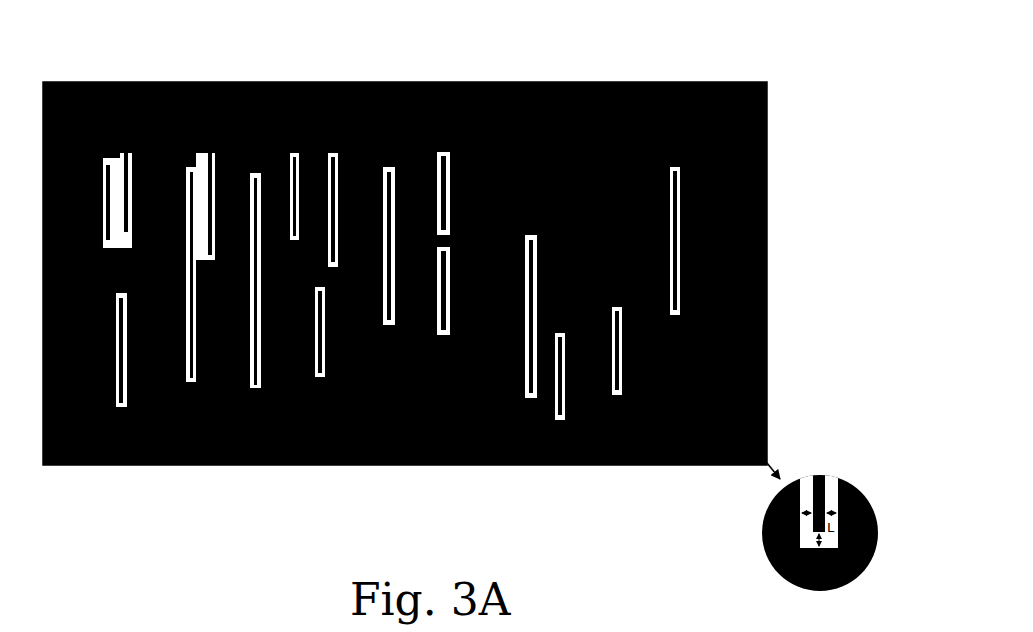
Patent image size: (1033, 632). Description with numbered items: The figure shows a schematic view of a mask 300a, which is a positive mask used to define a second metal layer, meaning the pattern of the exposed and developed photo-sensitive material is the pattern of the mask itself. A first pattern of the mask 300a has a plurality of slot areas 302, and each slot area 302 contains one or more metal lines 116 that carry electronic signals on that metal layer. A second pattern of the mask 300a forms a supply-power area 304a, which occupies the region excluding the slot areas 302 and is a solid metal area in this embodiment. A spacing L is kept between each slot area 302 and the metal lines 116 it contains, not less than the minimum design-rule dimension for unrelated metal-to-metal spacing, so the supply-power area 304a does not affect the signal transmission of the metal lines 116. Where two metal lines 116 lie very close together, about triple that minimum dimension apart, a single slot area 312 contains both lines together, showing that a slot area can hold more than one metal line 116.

The mask 300a is at (416, 272).
The slot areas 302 is at (258, 465).
The supply-power area 304a is at (608, 465).
The slot areas 312 is at (117, 81).
The metal lines 116 is at (245, 81).